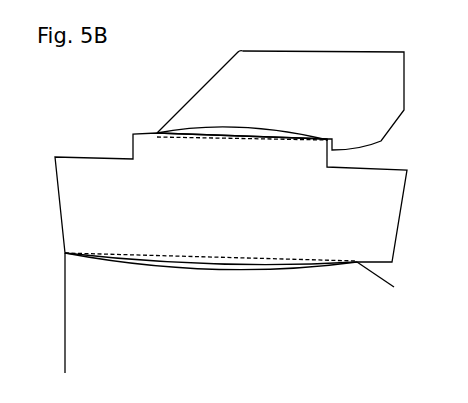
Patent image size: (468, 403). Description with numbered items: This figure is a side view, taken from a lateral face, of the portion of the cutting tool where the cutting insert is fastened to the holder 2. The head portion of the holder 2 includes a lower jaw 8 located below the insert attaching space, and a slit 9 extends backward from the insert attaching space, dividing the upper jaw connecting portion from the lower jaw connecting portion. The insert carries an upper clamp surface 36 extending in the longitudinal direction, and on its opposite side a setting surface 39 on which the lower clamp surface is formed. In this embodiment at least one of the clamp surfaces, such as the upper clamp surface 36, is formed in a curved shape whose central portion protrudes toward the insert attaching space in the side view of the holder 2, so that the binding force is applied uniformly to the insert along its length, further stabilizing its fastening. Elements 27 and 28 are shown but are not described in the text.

The holder 2 is at (95, 199).
The clamping jaw 27 is at (215, 86).
The upper clamp surface 36 is at (233, 130).
The lower jaw 8 is at (223, 138).
The slit 9 is at (232, 258).
The setting surface 39 is at (213, 275).
The reference line 28 is at (88, 345).